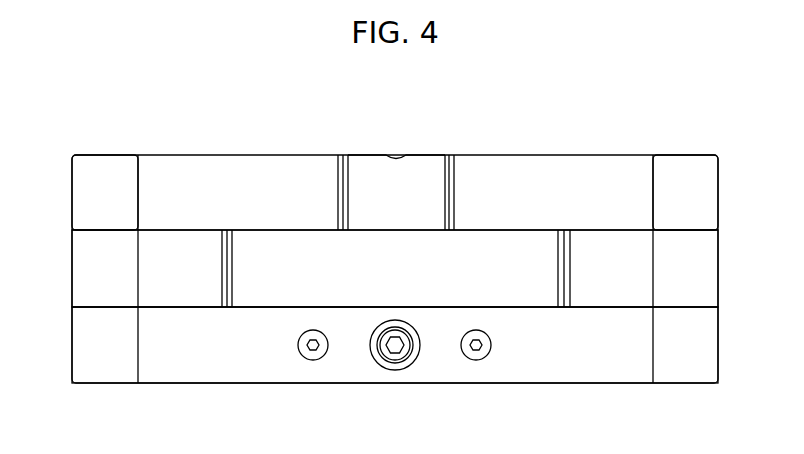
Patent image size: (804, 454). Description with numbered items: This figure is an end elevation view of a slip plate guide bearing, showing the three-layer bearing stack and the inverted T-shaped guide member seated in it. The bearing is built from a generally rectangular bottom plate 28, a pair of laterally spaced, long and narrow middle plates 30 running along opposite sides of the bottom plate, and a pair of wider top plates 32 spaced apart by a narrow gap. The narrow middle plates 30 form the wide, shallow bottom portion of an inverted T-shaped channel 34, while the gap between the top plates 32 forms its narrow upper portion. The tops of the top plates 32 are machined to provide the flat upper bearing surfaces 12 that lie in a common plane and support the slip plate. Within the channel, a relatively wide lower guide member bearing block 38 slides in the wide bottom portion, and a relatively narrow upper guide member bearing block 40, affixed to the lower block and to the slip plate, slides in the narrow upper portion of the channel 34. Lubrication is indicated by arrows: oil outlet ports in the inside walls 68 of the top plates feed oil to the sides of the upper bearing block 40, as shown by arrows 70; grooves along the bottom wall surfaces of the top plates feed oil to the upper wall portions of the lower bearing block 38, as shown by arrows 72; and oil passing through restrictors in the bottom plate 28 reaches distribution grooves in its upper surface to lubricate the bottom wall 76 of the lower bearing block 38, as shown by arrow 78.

The upper bearing surface 12 is at (185, 155).
The bottom plate 28 is at (192, 353).
The middle plate 30 is at (72, 270).
The top plate 32 is at (72, 193).
The T-shaped channel 34 is at (240, 273).
The lower guide member bearing block 38 is at (512, 280).
The upper guide member bearing block 40 is at (412, 178).
The inside wall 68 is at (350, 165).
The arrow 70 is at (336, 193).
The arrow 72 is at (300, 227).
The bottom wall 76 is at (300, 307).
The arrow 78 is at (347, 310).